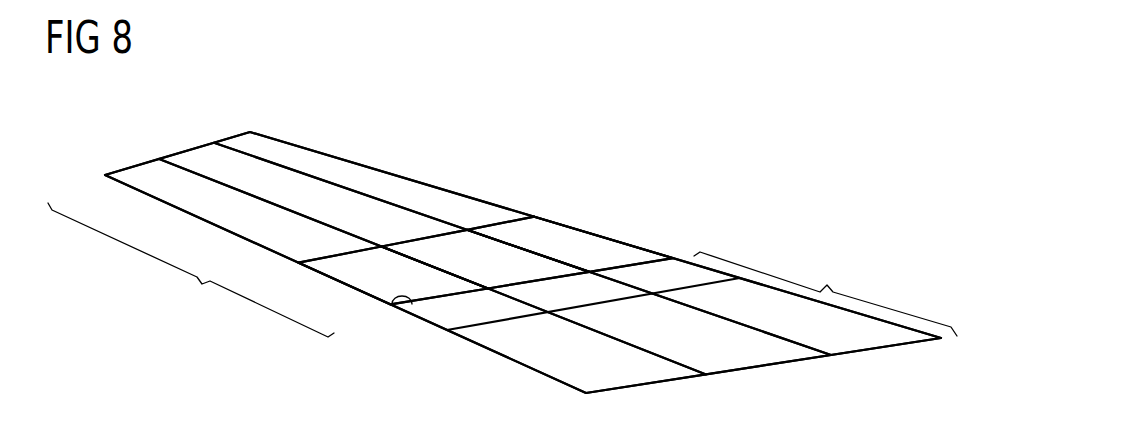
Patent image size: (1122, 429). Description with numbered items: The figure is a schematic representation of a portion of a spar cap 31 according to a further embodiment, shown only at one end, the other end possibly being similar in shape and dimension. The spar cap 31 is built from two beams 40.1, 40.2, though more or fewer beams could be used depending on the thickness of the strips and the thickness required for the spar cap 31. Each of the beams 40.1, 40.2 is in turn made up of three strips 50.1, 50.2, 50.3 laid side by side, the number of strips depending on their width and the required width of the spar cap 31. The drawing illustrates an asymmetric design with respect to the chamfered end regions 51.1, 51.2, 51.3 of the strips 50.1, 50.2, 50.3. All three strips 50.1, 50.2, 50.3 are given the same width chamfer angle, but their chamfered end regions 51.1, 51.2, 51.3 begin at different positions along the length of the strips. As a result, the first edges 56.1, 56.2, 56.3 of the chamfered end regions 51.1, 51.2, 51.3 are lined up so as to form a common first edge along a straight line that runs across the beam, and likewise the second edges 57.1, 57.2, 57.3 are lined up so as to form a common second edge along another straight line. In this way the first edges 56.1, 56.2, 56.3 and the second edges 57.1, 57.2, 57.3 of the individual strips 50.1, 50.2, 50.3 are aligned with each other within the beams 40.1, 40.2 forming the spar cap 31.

The spar cap 31 is at (859, 178).
The first beam 40.1 is at (191, 270).
The second beam 40.2 is at (825, 294).
The first strip 50.1 is at (240, 140).
The second strip 50.2 is at (192, 158).
The third strip 50.3 is at (135, 177).
The chamfered end region of the first strip 51.1 is at (543, 230).
The chamfered end region of the second strip 51.2 is at (473, 268).
The chamfered end region of the third strip 51.3 is at (340, 275).
The first edge of the first strip 56.1 is at (498, 218).
The first edge of the second strip 56.2 is at (417, 237).
The first edge of the third strip 56.3 is at (340, 250).
The second edge of the first strip 57.1 is at (645, 262).
The second edge of the second strip 57.2 is at (550, 273).
The second edge of the third strip 57.3 is at (390, 305).